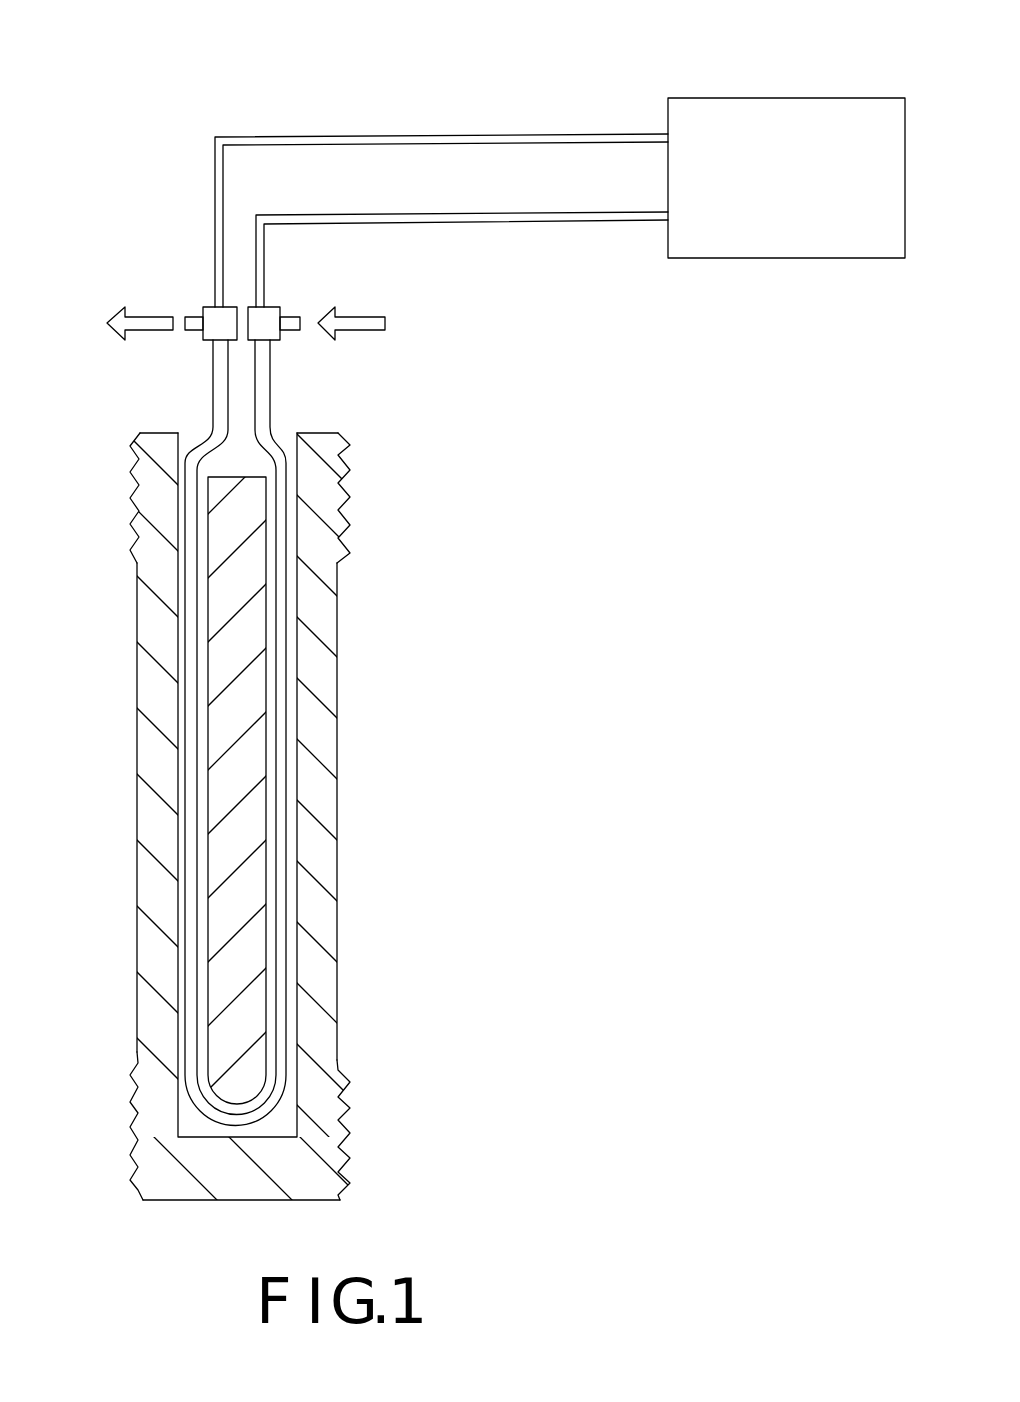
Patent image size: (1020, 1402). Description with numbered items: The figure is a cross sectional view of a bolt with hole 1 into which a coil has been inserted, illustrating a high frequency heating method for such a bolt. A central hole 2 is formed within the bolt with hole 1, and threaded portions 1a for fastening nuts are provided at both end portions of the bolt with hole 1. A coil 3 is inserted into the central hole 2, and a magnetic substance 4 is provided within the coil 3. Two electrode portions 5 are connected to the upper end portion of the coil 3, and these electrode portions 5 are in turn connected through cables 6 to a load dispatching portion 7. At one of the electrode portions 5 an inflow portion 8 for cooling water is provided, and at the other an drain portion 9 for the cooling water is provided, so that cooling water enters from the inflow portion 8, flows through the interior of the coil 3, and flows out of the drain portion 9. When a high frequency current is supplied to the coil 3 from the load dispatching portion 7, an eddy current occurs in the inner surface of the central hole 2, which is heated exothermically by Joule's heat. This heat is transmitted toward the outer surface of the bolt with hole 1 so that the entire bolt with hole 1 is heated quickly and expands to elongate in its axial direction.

The bolt with hole 1 is at (150, 753).
The threaded portions 1a is at (350, 500).
The central hole 2 is at (172, 893).
The coil 3 is at (290, 838).
The magnetic substance 4 is at (252, 700).
The electrode portions 5 is at (260, 320).
The cables 6 is at (513, 215).
The load dispatching portion 7 is at (789, 98).
The inflow portion 8 is at (290, 322).
The drain portion 9 is at (192, 325).